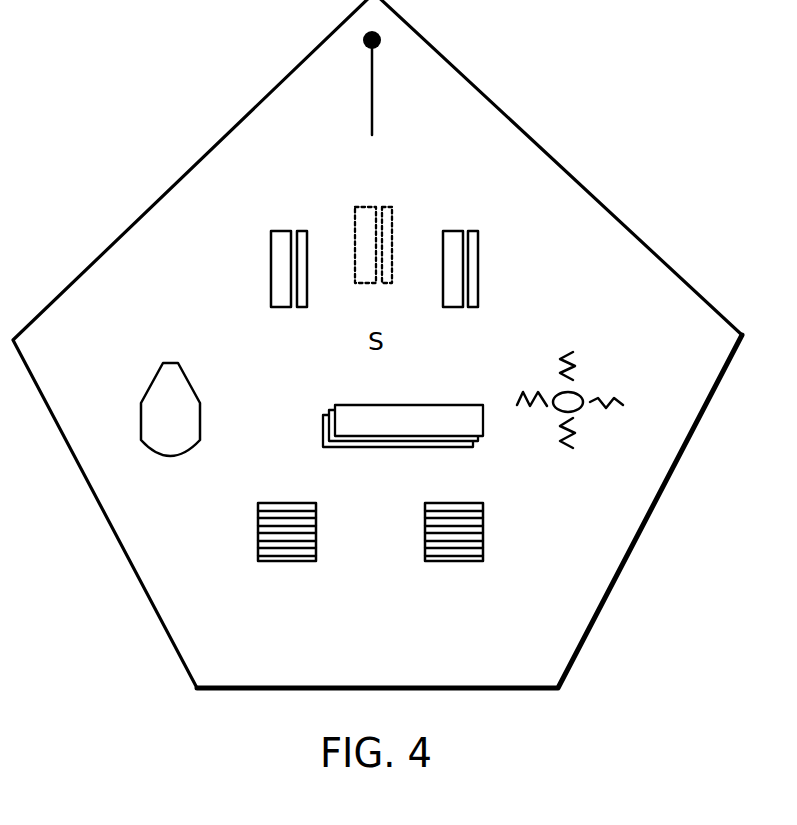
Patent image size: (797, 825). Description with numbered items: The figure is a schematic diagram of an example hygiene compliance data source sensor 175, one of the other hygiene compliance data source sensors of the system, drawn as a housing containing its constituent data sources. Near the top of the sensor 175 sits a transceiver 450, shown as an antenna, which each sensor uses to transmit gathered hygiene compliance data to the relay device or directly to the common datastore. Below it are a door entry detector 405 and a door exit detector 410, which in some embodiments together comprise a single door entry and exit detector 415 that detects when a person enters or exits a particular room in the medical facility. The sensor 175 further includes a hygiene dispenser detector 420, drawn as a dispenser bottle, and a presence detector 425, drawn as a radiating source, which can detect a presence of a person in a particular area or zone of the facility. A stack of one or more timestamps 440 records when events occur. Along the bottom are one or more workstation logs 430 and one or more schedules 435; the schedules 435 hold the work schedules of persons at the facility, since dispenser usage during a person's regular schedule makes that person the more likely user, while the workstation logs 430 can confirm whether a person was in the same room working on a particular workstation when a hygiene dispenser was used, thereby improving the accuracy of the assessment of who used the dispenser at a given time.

The hygiene compliance data source sensor 175 is at (632, 230).
The door entry detector 405 is at (270, 267).
The door exit detector 410 is at (442, 267).
The single door entry and exit detector 415 is at (497, 232).
The hygiene dispenser detector 420 is at (193, 383).
The presence detector 425 is at (578, 393).
The workstation log 430 is at (308, 562).
The schedule 435 is at (475, 562).
The timestamp 440 is at (320, 402).
The transceiver 450 is at (372, 77).